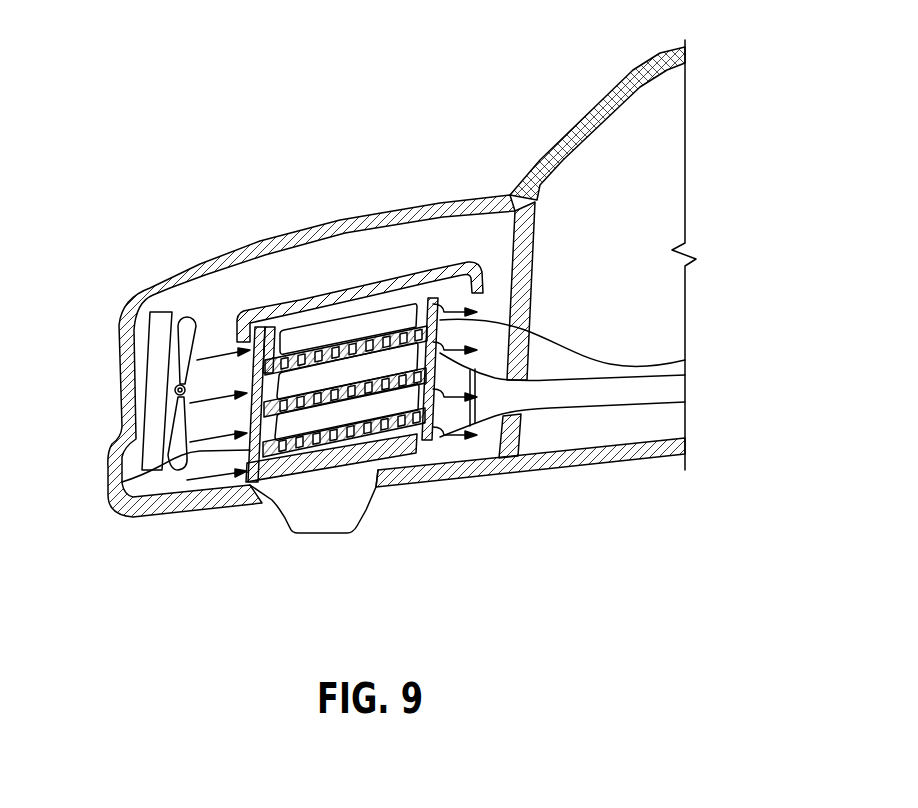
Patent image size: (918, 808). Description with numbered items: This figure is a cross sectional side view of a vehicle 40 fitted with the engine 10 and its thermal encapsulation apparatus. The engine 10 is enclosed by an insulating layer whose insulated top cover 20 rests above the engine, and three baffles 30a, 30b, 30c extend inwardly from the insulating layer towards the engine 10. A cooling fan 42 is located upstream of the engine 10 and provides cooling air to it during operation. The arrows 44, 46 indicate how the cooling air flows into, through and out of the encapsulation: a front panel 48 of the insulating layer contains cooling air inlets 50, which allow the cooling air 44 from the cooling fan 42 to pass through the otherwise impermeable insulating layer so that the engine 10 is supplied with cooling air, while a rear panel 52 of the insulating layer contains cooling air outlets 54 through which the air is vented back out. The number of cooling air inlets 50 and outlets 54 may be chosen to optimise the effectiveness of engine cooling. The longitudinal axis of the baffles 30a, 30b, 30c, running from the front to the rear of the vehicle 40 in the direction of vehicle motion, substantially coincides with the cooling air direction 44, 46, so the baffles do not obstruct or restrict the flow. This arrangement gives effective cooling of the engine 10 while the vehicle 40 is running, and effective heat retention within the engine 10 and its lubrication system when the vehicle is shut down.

The engine 10 is at (303, 338).
The insulated top cover 20 is at (337, 297).
The baffle 30a is at (392, 272).
The baffle 30b is at (381, 442).
The baffle 30c is at (362, 520).
The vehicle 40 is at (486, 156).
The cooling fan 42 is at (186, 310).
The cooling air 44 is at (186, 490).
The cooling air direction 46 is at (456, 469).
The front panel 48 is at (113, 486).
The cooling air inlets 50 is at (272, 432).
The rear panel 52 is at (686, 361).
The cooling air outlets 54 is at (426, 300).